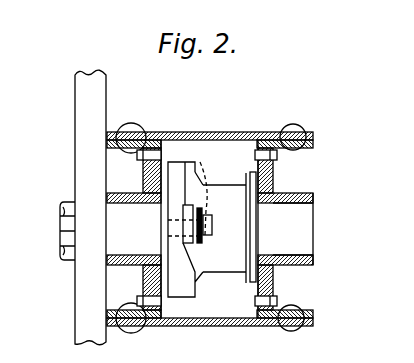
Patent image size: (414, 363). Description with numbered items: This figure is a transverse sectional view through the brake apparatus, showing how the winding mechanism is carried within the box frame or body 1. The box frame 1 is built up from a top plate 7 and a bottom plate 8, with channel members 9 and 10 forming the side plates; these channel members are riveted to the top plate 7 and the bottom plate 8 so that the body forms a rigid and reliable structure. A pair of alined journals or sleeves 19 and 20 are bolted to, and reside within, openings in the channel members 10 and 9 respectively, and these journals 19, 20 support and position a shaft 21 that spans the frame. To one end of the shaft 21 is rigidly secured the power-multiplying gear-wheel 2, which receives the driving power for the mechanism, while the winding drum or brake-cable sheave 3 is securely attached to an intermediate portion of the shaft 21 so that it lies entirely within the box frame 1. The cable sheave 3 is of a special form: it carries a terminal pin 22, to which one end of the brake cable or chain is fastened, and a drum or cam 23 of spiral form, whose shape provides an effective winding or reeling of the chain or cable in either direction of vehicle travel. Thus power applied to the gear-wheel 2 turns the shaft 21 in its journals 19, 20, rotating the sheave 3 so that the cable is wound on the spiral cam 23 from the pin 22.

The box frame 1 is at (235, 132).
The power-multiplying gear-wheel 2 is at (80, 113).
The winding drum or brake-cable sheave 3 is at (181, 162).
The top plate 7 is at (173, 132).
The bottom plate 8 is at (192, 328).
The channel member 9 is at (300, 310).
The channel member 10 is at (124, 319).
The journal or sleeve 19 is at (147, 174).
The journal or sleeve 20 is at (272, 181).
The shaft 21 is at (305, 228).
The terminal pin 22 is at (197, 268).
The drum or cam 23 is at (232, 263).